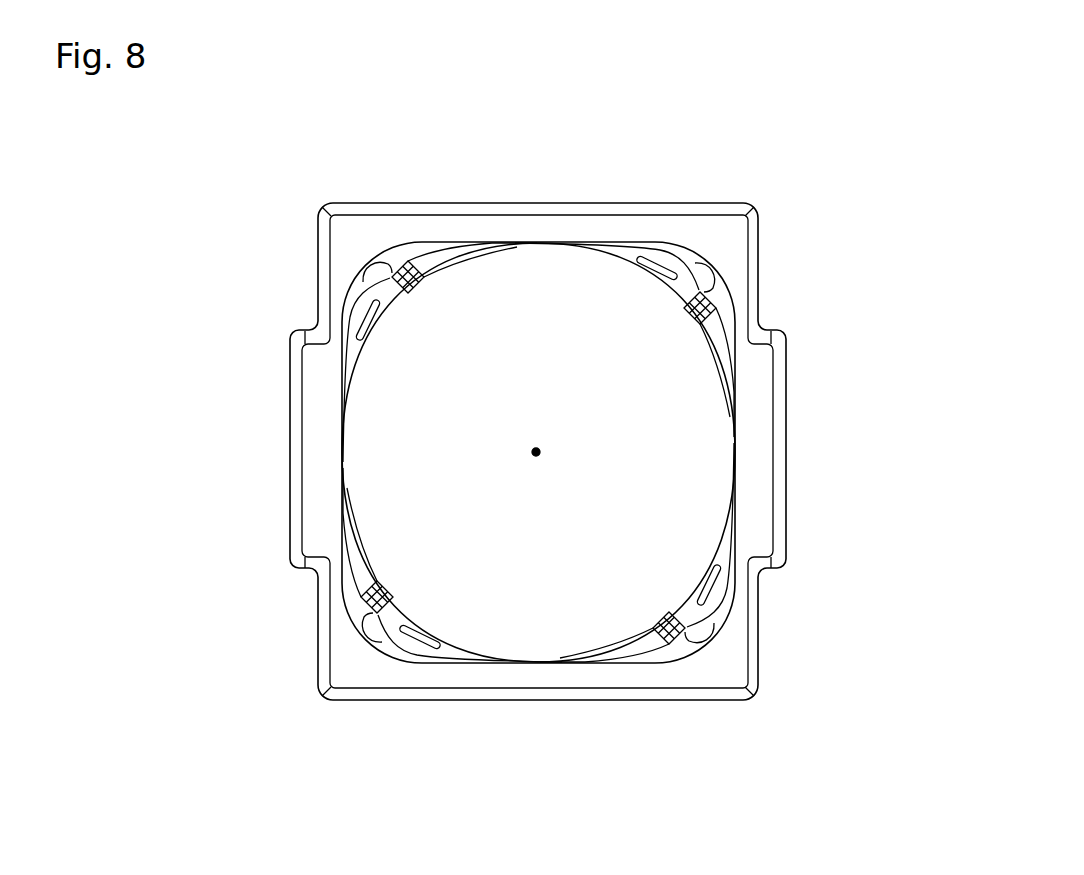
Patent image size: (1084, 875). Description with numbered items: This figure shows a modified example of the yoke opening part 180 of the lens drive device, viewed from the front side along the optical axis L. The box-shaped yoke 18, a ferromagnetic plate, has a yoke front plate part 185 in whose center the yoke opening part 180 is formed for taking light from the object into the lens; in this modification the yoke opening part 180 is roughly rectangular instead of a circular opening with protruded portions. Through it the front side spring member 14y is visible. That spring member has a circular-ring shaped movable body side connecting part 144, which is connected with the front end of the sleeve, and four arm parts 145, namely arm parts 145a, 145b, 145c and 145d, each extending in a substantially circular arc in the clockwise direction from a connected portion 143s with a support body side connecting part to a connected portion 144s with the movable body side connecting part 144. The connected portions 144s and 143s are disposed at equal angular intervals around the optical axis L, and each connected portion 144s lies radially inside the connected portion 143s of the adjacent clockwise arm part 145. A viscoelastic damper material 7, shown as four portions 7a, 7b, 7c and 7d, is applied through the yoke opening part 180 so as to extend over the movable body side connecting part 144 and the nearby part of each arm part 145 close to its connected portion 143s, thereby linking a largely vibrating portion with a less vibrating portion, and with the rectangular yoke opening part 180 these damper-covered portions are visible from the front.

The yoke 18 is at (522, 451).
The yoke front plate part 185 is at (312, 466).
The yoke opening part 180 is at (748, 452).
The front side spring member 14y is at (366, 355).
The movable body side connecting part 144 is at (365, 335).
The connected portion 144s is at (372, 312).
The arm part 145 is at (512, 460).
The arm part 145a is at (728, 322).
The arm part 145b is at (512, 617).
The arm part 145c is at (347, 322).
The arm part 145d is at (428, 248).
The connected portion 143s is at (548, 460).
The damper material 7 is at (613, 451).
The damper material 7a is at (718, 306).
The damper material 7b is at (672, 644).
The damper material 7c is at (380, 580).
The damper material 7d is at (424, 280).
The optical axis L is at (540, 456).